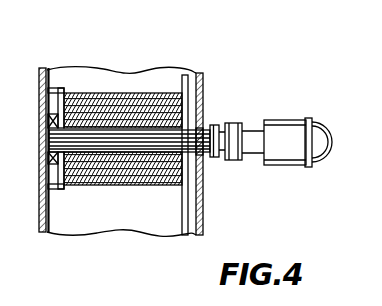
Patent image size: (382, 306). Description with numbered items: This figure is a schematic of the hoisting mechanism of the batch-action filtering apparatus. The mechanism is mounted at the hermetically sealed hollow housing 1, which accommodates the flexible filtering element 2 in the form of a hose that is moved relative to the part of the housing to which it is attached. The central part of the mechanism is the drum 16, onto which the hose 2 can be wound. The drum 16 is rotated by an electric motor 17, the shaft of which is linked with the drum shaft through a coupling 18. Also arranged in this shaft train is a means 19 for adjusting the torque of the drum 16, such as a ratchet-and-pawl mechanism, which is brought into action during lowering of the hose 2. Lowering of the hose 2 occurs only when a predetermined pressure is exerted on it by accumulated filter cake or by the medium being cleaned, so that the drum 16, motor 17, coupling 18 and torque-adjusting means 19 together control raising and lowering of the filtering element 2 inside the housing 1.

The housing 1 is at (204, 93).
The flexible filtering element 2 is at (167, 207).
The drum 16 is at (59, 88).
The electric motor 17 is at (282, 131).
The coupling 18 is at (243, 160).
The means for adjusting the torque of the drum 19 is at (213, 158).